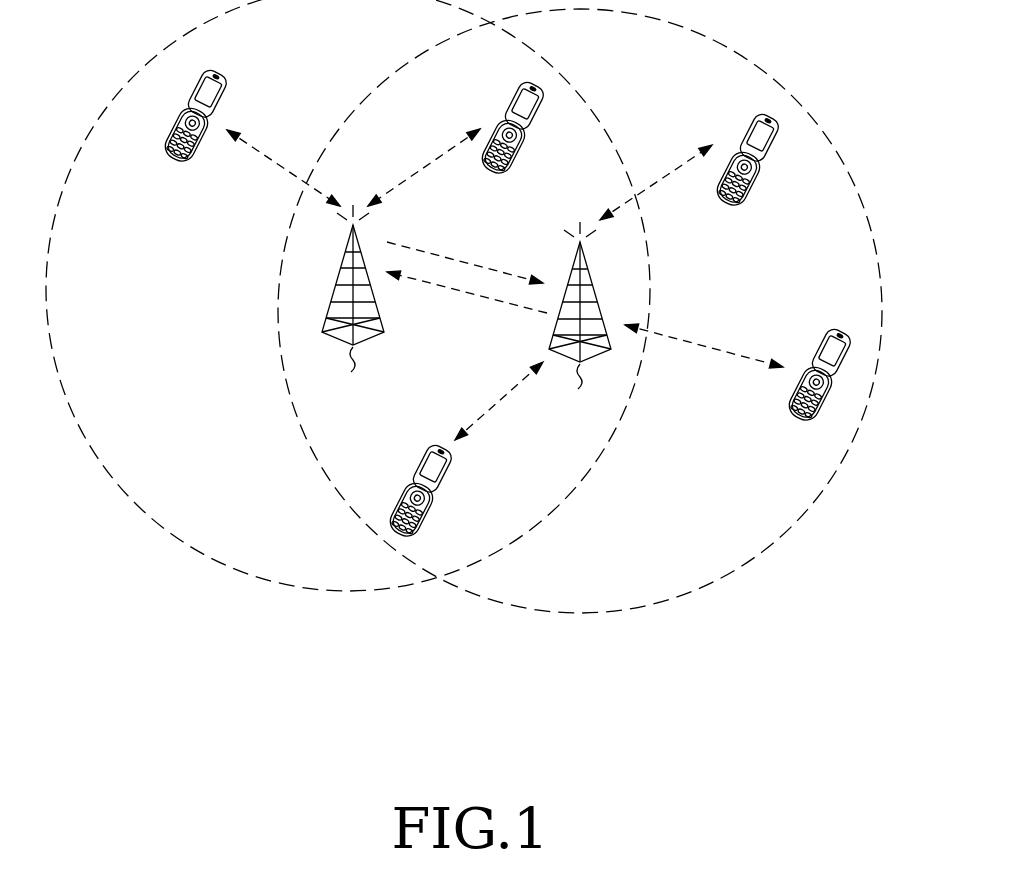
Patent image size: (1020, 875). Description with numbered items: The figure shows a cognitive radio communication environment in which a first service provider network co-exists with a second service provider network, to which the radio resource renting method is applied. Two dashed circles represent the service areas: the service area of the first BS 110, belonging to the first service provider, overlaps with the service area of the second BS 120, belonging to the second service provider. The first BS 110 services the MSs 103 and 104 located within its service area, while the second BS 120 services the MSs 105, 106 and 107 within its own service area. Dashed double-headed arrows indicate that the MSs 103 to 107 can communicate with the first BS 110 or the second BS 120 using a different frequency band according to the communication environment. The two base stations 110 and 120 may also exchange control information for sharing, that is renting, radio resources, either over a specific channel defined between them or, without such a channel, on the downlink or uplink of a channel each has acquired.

The mobile station 103 is at (181, 166).
The mobile station 104 is at (497, 178).
The mobile station 105 is at (831, 324).
The mobile station 106 is at (432, 439).
The mobile station 107 is at (733, 212).
The first base station 110 is at (353, 304).
The second base station 120 is at (580, 322).